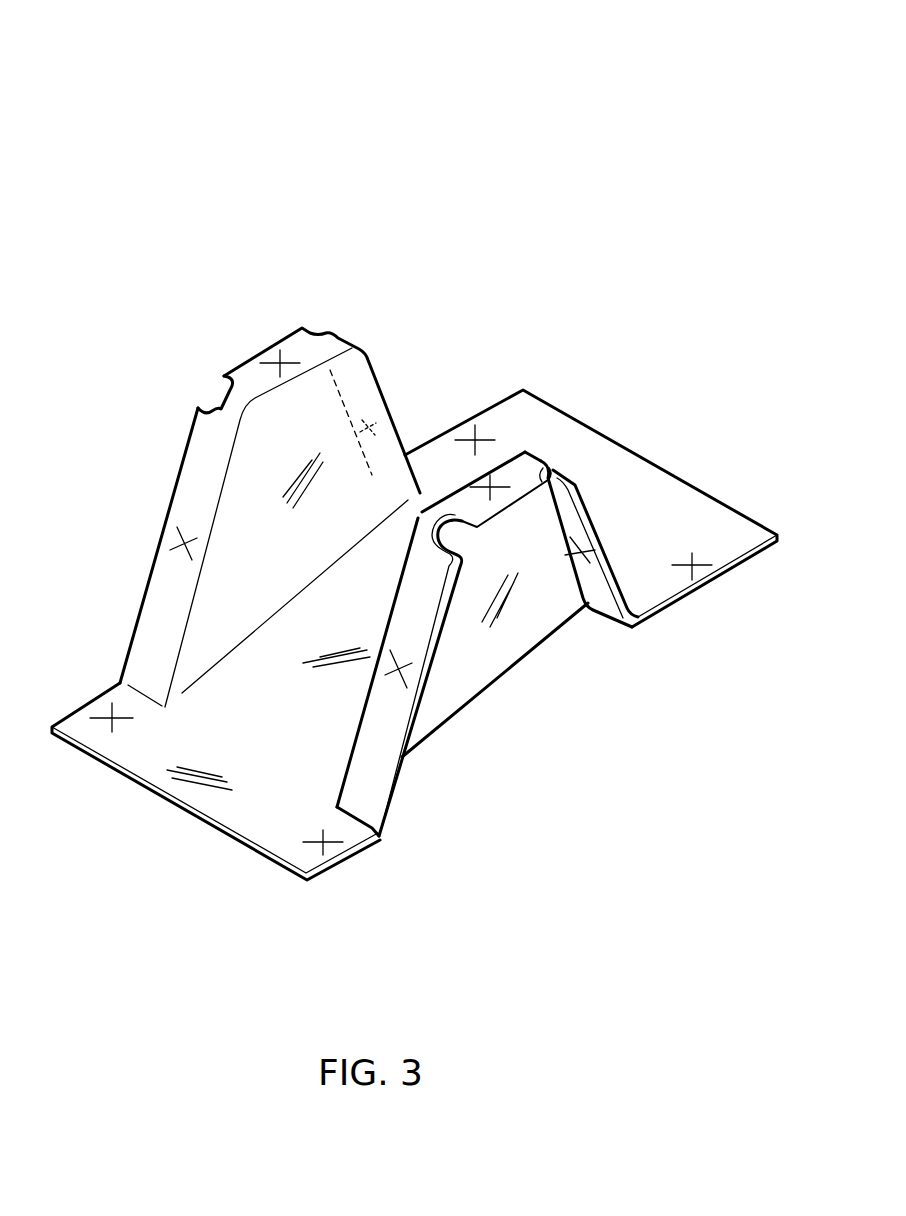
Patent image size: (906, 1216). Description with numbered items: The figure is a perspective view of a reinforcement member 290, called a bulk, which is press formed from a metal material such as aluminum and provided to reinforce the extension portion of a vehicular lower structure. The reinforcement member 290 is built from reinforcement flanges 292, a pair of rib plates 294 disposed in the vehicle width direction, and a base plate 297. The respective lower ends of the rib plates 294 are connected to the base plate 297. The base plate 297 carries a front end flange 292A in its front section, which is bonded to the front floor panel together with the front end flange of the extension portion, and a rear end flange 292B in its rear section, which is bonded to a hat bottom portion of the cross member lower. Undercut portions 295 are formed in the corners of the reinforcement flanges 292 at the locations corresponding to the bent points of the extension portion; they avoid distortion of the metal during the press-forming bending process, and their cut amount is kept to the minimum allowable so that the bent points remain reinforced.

The reinforcement member 290 is at (200, 150).
The reinforcement flange 292 is at (193, 493).
The front end flange 292A is at (277, 837).
The rear end flange 292B is at (727, 540).
The rib plate 294 is at (227, 582).
The undercut portion 295 is at (318, 321).
The base plate 297 is at (242, 717).